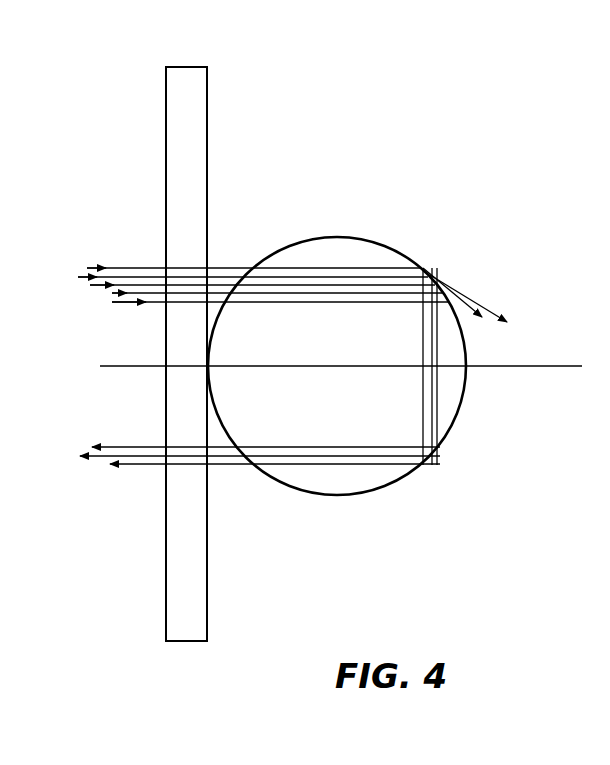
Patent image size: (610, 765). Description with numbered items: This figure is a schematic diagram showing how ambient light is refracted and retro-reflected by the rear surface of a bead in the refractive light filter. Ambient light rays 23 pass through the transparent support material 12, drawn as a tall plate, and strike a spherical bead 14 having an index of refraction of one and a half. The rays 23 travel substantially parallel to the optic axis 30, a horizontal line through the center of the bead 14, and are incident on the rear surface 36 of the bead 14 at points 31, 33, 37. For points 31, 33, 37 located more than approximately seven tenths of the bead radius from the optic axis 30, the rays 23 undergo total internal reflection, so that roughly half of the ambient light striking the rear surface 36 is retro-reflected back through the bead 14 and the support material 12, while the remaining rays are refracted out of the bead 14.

The support material 12 is at (195, 600).
The spherical bead 14 is at (363, 478).
The ambient light rays 23 is at (74, 265).
The optic axis 30 is at (515, 366).
The point on rear surface 31 is at (445, 283).
The point on rear surface 33 is at (430, 277).
The rear surface 36 is at (452, 398).
The point on rear surface 37 is at (440, 260).